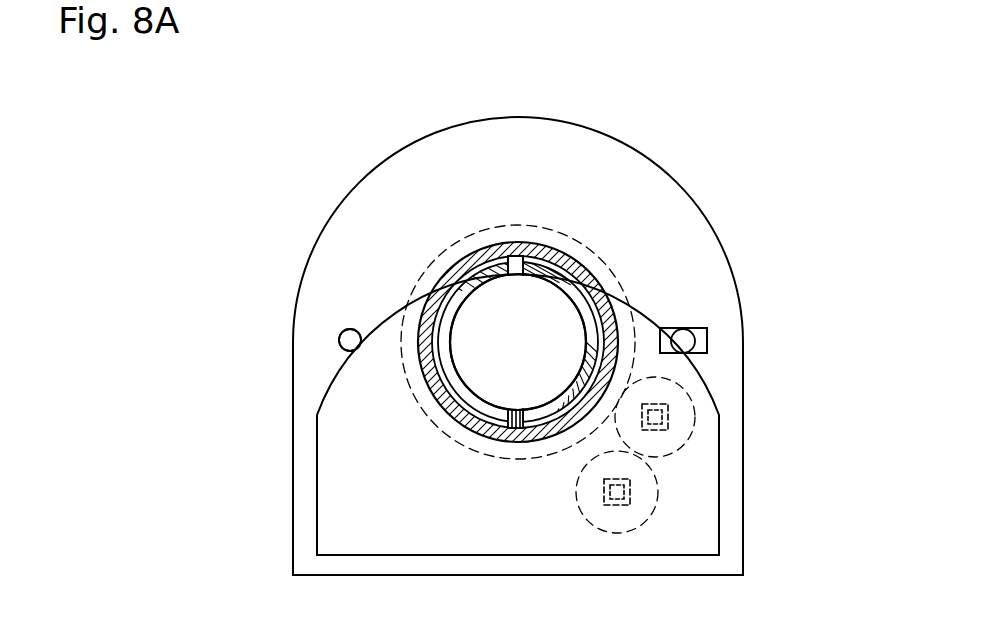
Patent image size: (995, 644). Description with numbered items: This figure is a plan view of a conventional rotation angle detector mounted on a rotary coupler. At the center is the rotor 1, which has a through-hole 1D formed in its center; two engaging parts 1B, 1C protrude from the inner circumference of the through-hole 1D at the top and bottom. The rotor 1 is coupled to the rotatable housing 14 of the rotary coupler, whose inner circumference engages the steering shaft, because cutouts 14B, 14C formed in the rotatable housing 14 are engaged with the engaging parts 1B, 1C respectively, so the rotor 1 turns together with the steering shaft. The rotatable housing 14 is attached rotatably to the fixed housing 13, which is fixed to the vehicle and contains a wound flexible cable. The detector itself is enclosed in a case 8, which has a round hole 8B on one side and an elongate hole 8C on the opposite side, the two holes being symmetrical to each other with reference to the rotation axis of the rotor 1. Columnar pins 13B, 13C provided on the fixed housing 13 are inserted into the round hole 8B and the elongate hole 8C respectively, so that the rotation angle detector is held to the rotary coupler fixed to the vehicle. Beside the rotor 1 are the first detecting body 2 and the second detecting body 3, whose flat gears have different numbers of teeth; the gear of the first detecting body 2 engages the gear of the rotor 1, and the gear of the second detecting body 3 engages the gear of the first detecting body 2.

The rotor 1 is at (415, 405).
The engaging part 1B is at (512, 262).
The engaging part 1C is at (518, 424).
The through-hole 1D is at (540, 300).
The first detecting body 2 is at (687, 433).
The second detecting body 3 is at (633, 520).
The case 8 is at (403, 171).
The round hole 8B is at (338, 347).
The elongate hole 8C is at (707, 333).
The fixed housing 13 is at (334, 211).
The pin 13B is at (340, 334).
The pin 13C is at (692, 343).
The rotatable housing 14 is at (610, 293).
The cutout 14B is at (522, 266).
The cutout 14C is at (507, 415).